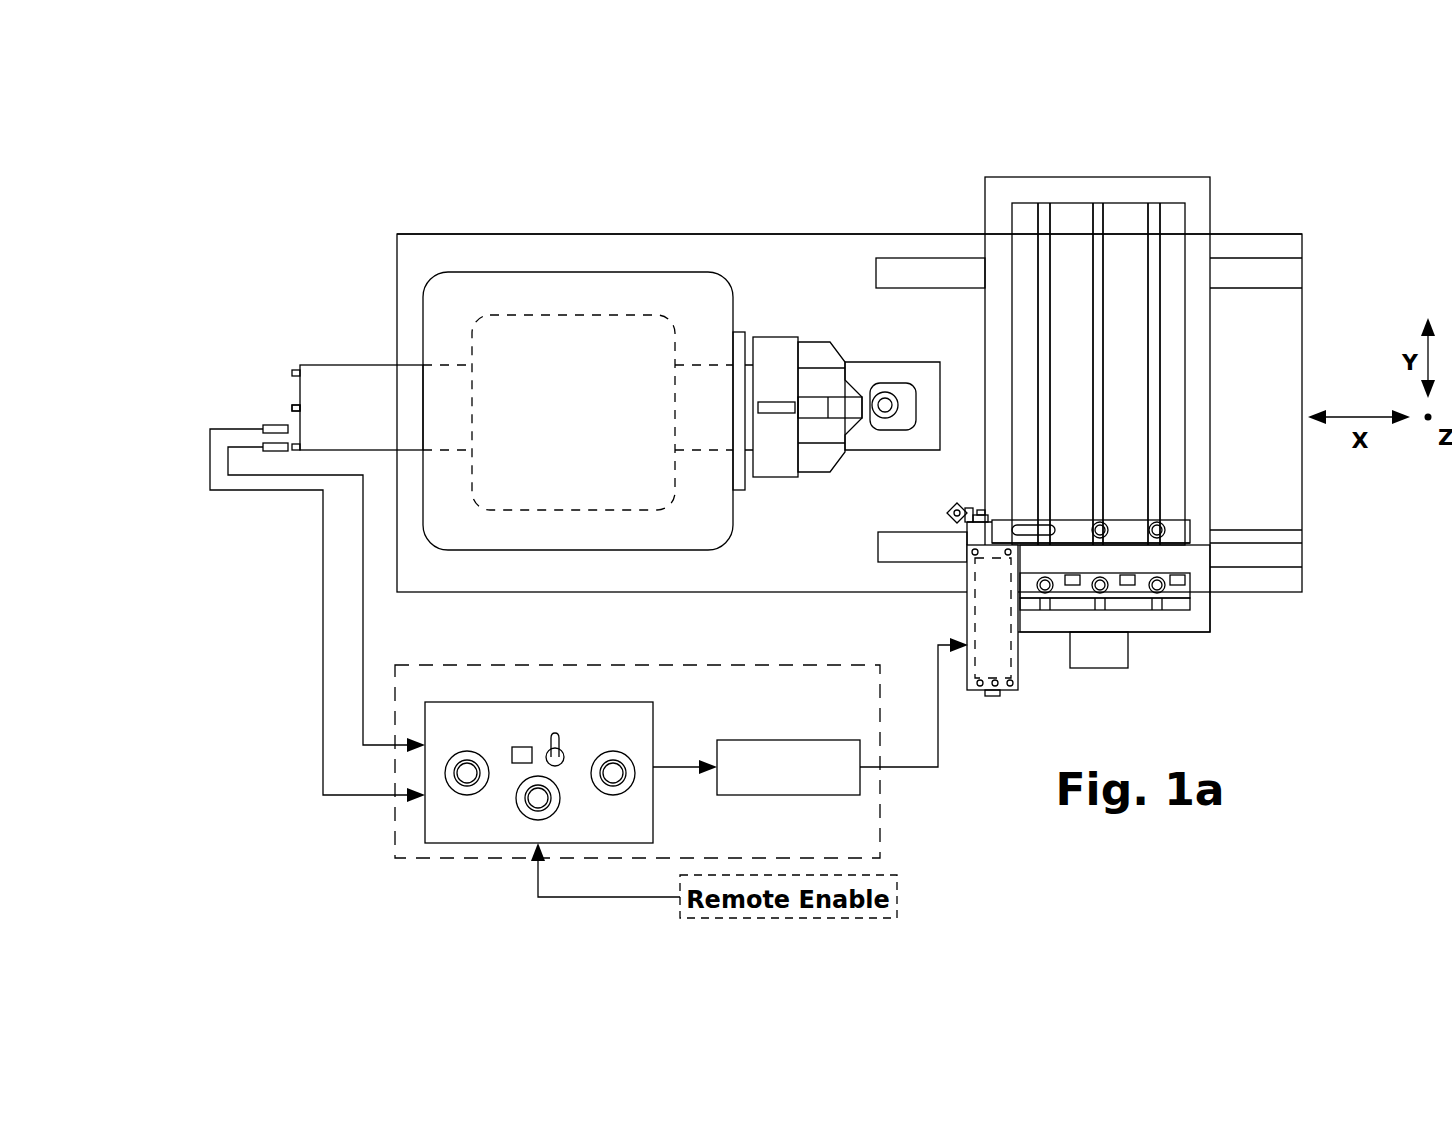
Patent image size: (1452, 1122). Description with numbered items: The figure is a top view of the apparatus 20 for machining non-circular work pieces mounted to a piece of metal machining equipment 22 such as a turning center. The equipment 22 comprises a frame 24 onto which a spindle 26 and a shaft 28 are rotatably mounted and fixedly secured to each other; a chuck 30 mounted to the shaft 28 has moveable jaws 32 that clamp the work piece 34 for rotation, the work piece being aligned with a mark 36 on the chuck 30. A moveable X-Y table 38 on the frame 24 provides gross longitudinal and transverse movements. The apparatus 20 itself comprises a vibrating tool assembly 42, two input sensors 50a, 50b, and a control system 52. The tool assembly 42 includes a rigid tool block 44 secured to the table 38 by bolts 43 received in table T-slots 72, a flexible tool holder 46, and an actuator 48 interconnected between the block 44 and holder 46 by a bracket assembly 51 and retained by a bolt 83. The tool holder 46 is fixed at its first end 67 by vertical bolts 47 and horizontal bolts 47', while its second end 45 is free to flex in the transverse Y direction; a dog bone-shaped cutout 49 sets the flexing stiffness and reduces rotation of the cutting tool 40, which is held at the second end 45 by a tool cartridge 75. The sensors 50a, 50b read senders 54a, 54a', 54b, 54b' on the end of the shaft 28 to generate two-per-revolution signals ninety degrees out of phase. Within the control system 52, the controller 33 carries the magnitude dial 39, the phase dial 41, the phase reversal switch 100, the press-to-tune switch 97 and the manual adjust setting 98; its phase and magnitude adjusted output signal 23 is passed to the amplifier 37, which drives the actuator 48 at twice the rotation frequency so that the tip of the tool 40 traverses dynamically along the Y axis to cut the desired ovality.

The apparatus for machining non-circular work pieces 20 is at (920, 802).
The metal machining equipment 22 is at (690, 216).
The phase and magnitude adjusted output signal 23 is at (670, 770).
The frame 24 is at (795, 232).
The spindle 26 is at (575, 315).
The shaft 28 is at (358, 363).
The chuck 30 is at (803, 310).
The moveable jaws 32 is at (820, 348).
The controller 33 is at (550, 702).
The work piece 34 is at (920, 362).
The mark 36 is at (775, 415).
The amplifier 37 is at (800, 740).
The X-Y table 38 is at (1210, 210).
The magnitude dial 39 is at (448, 783).
The cutting tool 40 is at (957, 503).
The phase dial 41 is at (615, 752).
The vibrating tool assembly 42 is at (1072, 618).
The bolts 43 is at (1053, 577).
The tool block 44 is at (1188, 600).
The second end 45 is at (982, 532).
The flexible tool holder 46 is at (1000, 497).
The vertical bolts 47 is at (1131, 505).
The horizontal bolts 47' is at (1133, 643).
The actuator 48 is at (1018, 655).
The dog bone-shaped cutout 49 is at (1045, 518).
The input sensor 50a is at (268, 425).
The input sensor 50b is at (262, 452).
The bracket assembly 51 is at (1010, 697).
The control system 52 is at (717, 666).
The sender 54a is at (229, 383).
The sender 54a' is at (296, 408).
The sender 54b is at (280, 487).
The sender 54b' is at (265, 351).
The first end 67 is at (1182, 530).
The table T-slots 72 is at (1150, 342).
The tool cartridge 75 is at (948, 522).
The bolt 83 is at (985, 697).
The press-to-tune switch 97 is at (510, 757).
The manual adjust setting 98 is at (520, 805).
The phase reversal switch 100 is at (560, 752).